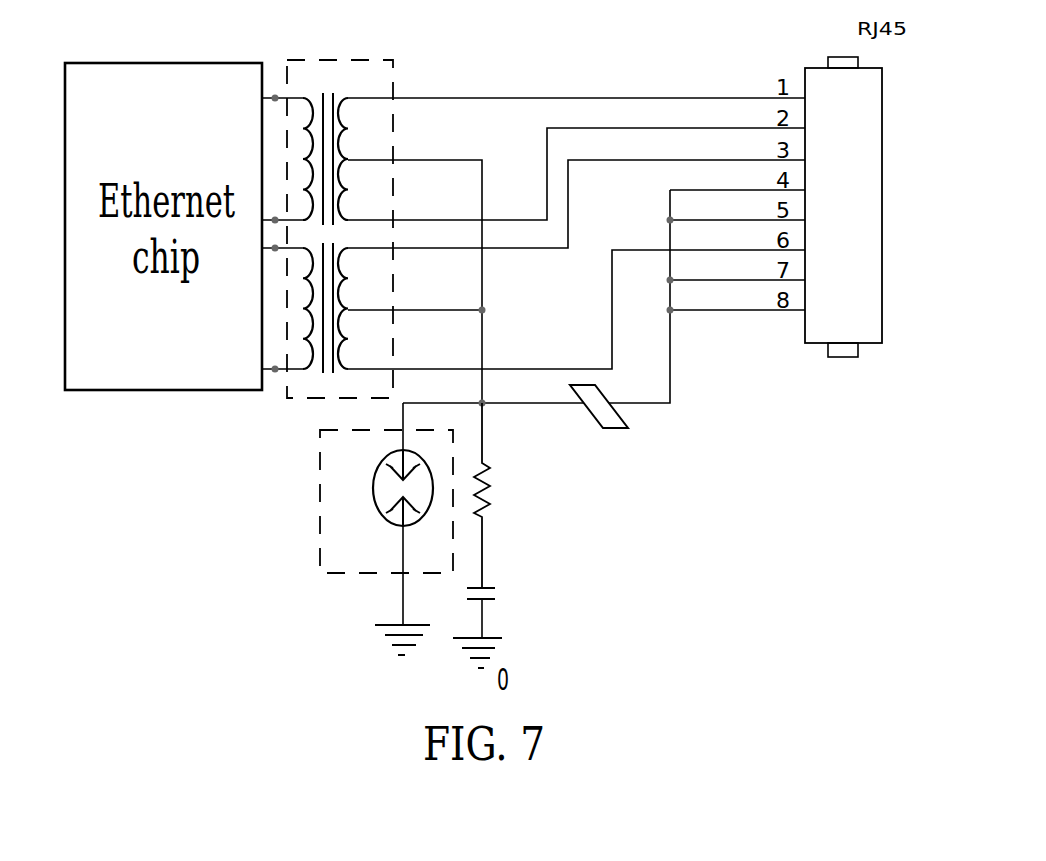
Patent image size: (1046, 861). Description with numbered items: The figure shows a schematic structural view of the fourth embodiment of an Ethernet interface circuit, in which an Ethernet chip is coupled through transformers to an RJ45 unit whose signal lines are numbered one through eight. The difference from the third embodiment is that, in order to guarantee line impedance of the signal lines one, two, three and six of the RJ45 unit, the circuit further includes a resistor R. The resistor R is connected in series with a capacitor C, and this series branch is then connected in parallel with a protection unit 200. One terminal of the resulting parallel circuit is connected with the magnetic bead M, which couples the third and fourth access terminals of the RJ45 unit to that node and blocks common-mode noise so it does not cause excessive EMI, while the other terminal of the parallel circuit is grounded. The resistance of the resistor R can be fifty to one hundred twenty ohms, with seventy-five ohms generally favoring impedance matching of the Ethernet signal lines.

The protection unit 200 is at (320, 518).
The resistor R is at (506, 495).
The capacitor C is at (498, 602).
The magnetic bead M is at (603, 440).